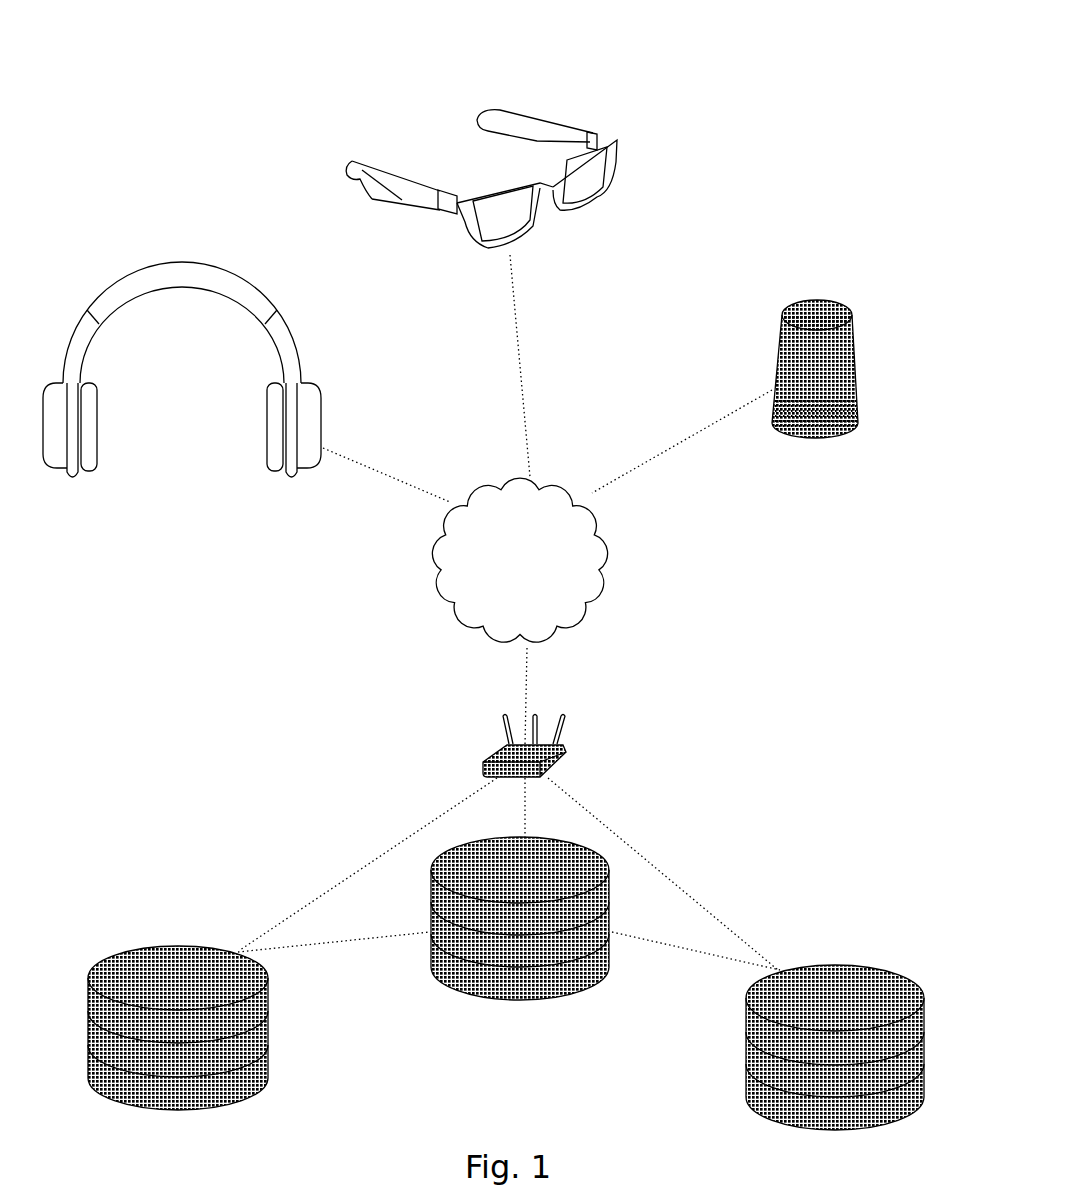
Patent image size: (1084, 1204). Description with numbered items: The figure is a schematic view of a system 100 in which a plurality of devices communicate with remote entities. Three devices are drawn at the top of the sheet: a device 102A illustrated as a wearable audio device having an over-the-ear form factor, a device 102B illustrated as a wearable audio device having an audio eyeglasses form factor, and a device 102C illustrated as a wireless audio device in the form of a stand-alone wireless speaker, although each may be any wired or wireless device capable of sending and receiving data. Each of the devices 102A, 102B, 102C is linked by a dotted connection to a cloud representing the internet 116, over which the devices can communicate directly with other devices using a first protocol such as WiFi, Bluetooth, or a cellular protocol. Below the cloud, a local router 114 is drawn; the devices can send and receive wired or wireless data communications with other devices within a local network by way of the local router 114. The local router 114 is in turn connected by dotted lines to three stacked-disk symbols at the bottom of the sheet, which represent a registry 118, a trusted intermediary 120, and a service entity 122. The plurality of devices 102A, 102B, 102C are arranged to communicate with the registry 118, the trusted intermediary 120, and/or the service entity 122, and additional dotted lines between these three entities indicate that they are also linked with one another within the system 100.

The system 100 is at (762, 118).
The device 102A is at (220, 265).
The device 102B is at (580, 132).
The device 102C is at (850, 303).
The local router 114 is at (568, 757).
The internet 116 is at (610, 578).
The registry 118 is at (835, 963).
The trusted intermediary 120 is at (583, 988).
The service entity 122 is at (187, 943).